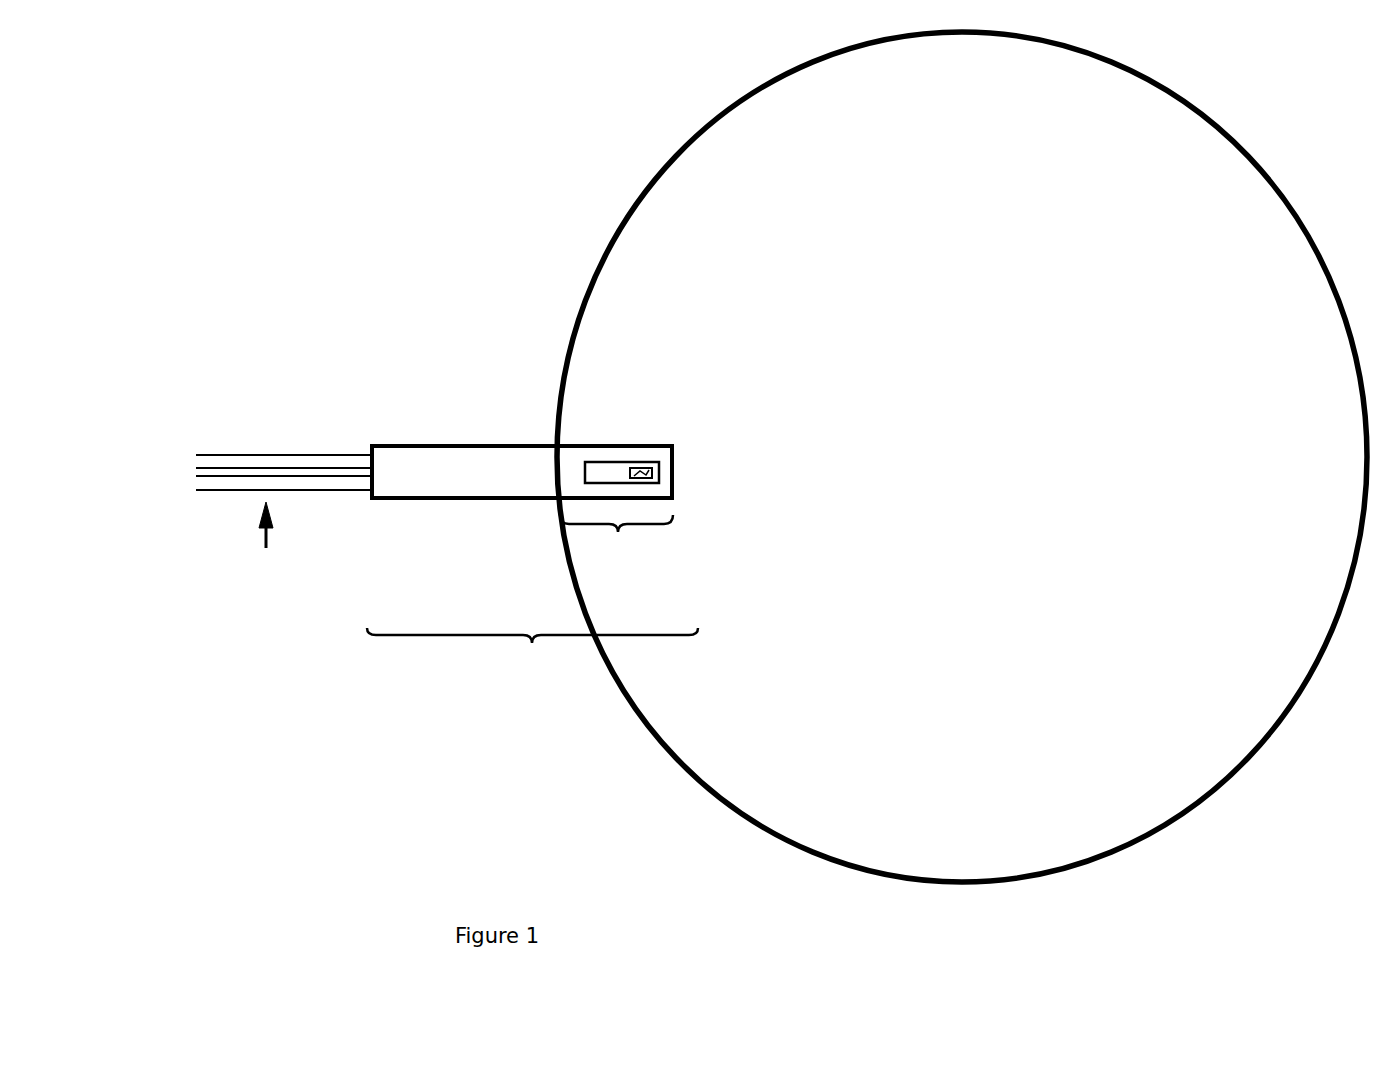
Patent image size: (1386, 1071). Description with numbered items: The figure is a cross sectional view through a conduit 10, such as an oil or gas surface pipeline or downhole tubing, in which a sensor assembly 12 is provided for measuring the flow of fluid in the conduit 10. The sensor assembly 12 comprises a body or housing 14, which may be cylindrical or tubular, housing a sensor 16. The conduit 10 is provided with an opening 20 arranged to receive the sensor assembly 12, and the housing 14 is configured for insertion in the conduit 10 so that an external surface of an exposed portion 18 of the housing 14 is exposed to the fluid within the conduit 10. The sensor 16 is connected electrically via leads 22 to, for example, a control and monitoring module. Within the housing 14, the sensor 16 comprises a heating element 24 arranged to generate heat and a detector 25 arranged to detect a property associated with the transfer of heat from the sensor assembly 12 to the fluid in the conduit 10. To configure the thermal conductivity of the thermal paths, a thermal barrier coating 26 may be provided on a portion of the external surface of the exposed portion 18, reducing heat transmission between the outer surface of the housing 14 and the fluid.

The conduit 10 is at (1248, 152).
The sensor assembly 12 is at (532, 650).
The housing 14 is at (413, 447).
The sensor 16 is at (603, 483).
The exposed portion 18 is at (616, 546).
The opening 20 is at (550, 447).
The leads 22 is at (265, 545).
The heating element 24 is at (595, 470).
The detector 25 is at (643, 468).
The thermal barrier coating 26 is at (540, 447).